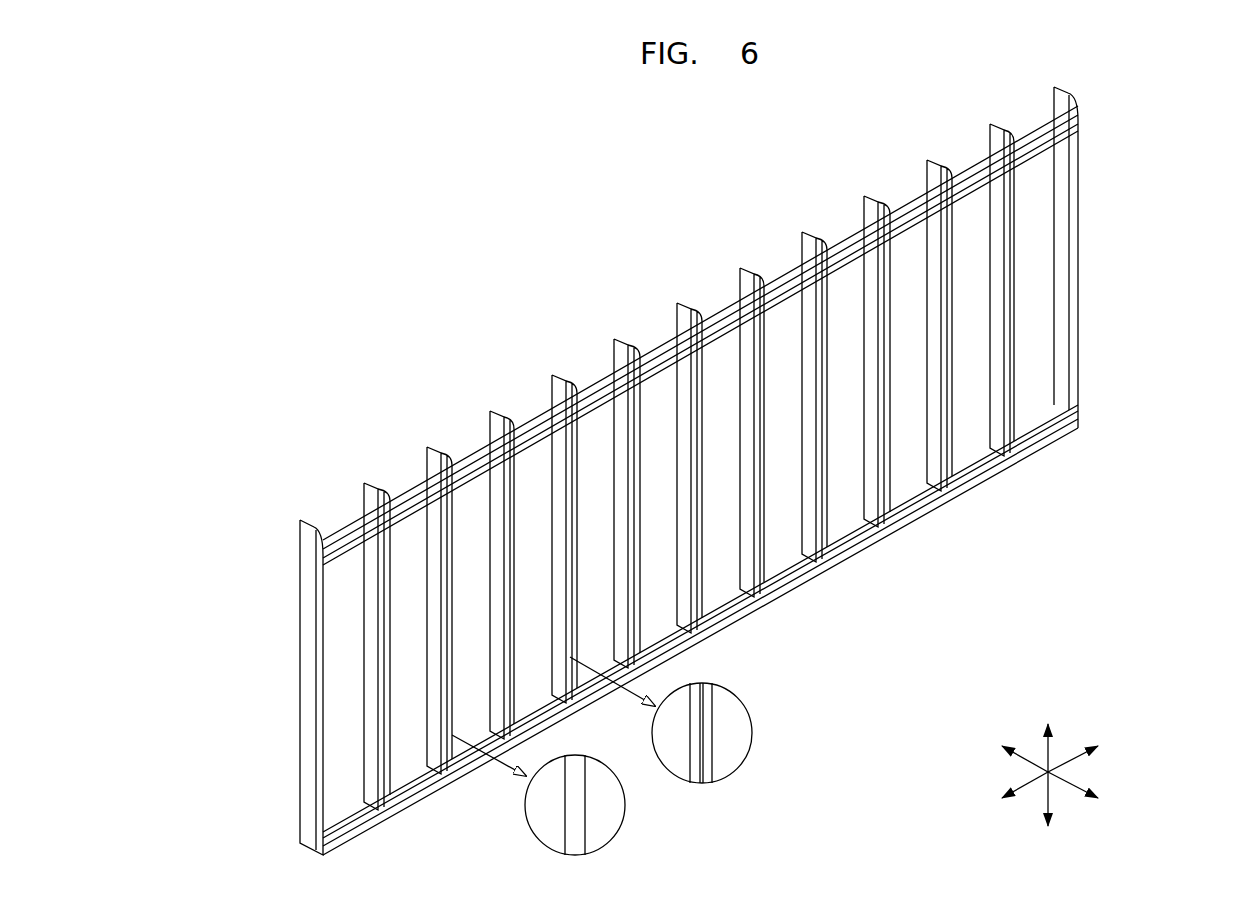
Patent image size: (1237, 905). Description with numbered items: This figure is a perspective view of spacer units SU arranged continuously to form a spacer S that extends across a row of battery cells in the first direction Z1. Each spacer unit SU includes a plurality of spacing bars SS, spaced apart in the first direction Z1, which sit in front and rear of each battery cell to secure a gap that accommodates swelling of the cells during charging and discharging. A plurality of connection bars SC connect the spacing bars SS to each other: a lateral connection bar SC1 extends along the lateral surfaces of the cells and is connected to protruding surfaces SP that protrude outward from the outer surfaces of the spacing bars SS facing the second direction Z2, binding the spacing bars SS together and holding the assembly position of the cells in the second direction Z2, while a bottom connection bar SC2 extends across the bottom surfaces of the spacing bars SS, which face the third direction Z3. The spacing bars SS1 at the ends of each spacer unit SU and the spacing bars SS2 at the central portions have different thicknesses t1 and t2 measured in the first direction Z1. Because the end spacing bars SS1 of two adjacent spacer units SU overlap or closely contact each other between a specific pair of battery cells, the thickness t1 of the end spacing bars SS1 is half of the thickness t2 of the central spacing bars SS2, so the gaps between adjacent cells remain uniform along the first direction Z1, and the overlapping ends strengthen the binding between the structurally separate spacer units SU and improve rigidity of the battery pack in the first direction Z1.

The spacer S is at (262, 714).
The protruding surface SP is at (318, 567).
The connection bar SC is at (1172, 212).
The lateral connection bar SC1 is at (1050, 147).
The bottom connection bar SC2 is at (1066, 410).
The spacer unit SU is at (1084, 437).
The spacing bar SS is at (765, 156).
The spacing bar at the end SS1 is at (808, 232).
The spacing bar at the central portion SS2 is at (747, 262).
The thickness of the spacing bars at the ends t1 is at (670, 760).
The thickness of the spacing bars at the central portions t2 is at (535, 833).
The first direction Z1 is at (1066, 762).
The second direction Z2 is at (1066, 784).
The third direction Z3 is at (1050, 757).